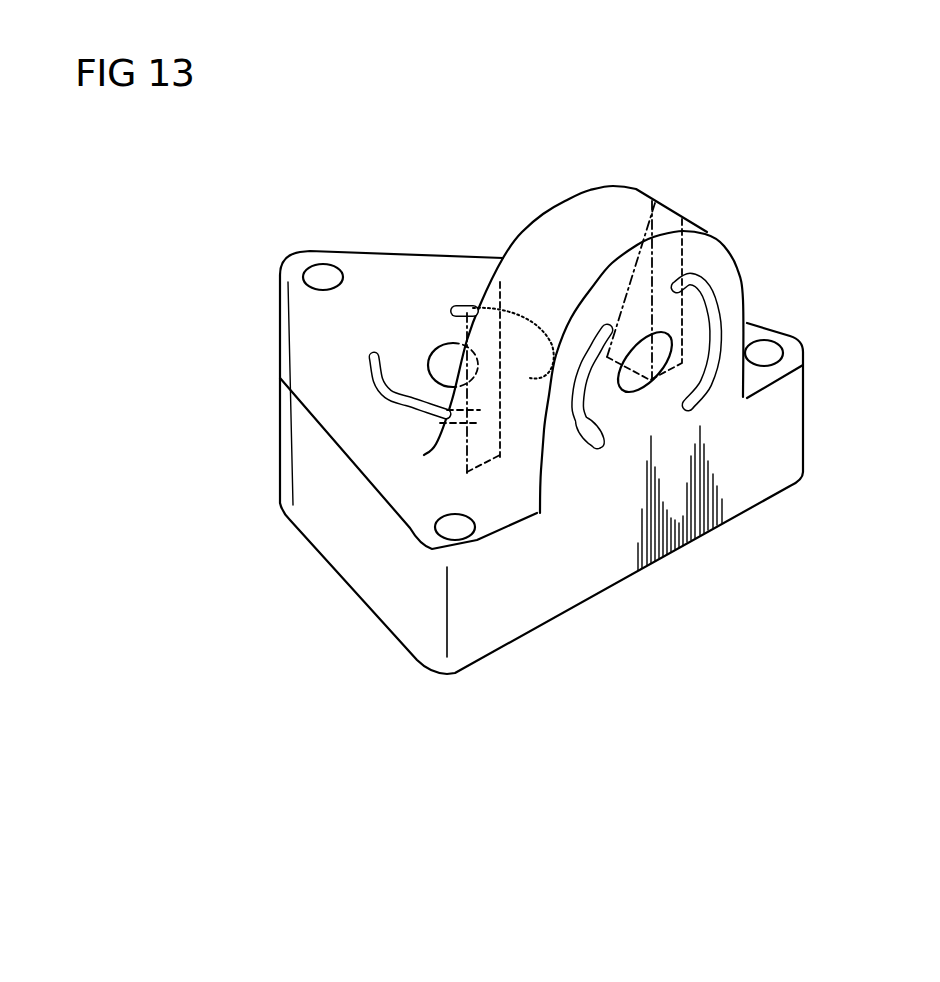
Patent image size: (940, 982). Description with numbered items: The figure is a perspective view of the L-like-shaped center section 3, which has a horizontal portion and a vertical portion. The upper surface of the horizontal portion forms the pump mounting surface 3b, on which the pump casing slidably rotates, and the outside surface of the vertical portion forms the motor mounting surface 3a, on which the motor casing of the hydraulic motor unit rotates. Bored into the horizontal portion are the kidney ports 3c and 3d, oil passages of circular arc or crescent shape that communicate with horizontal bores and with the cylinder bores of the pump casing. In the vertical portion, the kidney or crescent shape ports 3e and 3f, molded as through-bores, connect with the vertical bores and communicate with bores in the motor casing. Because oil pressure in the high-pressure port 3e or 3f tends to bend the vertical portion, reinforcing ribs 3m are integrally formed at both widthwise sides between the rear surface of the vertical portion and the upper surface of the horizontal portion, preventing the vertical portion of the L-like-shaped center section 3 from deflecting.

The L-like-shaped center section 3 is at (515, 218).
The motor mounting surface 3a is at (718, 388).
The pump mounting surface 3b is at (350, 326).
The kidney port 3c is at (371, 379).
The kidney port 3d is at (468, 305).
The kidney port 3e is at (574, 445).
The kidney port 3f is at (713, 311).
The reinforcing ribs 3m is at (450, 438).